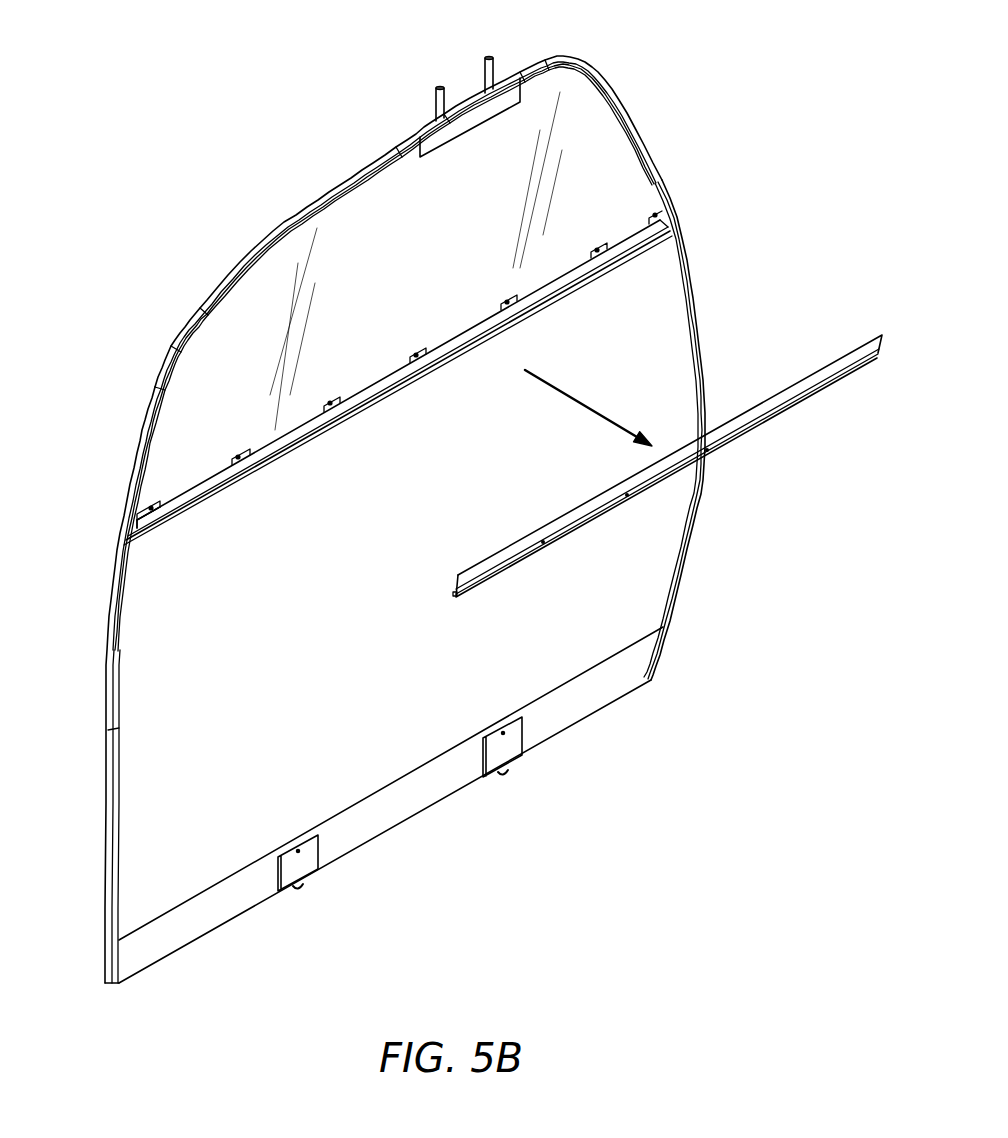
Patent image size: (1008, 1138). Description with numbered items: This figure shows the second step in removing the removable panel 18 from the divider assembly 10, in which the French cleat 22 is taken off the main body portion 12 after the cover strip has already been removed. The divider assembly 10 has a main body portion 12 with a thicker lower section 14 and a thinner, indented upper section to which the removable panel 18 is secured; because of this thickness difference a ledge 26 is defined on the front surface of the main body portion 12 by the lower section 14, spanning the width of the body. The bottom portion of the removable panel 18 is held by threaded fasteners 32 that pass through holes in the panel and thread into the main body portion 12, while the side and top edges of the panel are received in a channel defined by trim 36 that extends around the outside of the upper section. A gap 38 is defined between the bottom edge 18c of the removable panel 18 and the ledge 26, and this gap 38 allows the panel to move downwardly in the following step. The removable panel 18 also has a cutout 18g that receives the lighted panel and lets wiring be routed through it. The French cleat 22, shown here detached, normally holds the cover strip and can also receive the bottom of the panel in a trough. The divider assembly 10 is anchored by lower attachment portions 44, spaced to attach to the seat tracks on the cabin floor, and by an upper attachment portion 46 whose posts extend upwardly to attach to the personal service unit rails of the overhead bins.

The divider assembly 10 is at (180, 190).
The main body portion 12 is at (153, 658).
The lower section 14 is at (670, 551).
The removable panel 18 is at (421, 288).
The bottom edge 18c is at (257, 459).
The cutout 18g is at (195, 483).
The French cleat 22 is at (791, 400).
The ledge 26 is at (178, 513).
The threaded fasteners 32 is at (667, 222).
The trim 36 is at (627, 102).
The gap 38 is at (286, 443).
The lower attachment portions 44 is at (511, 748).
The upper attachment portion 46 is at (498, 66).